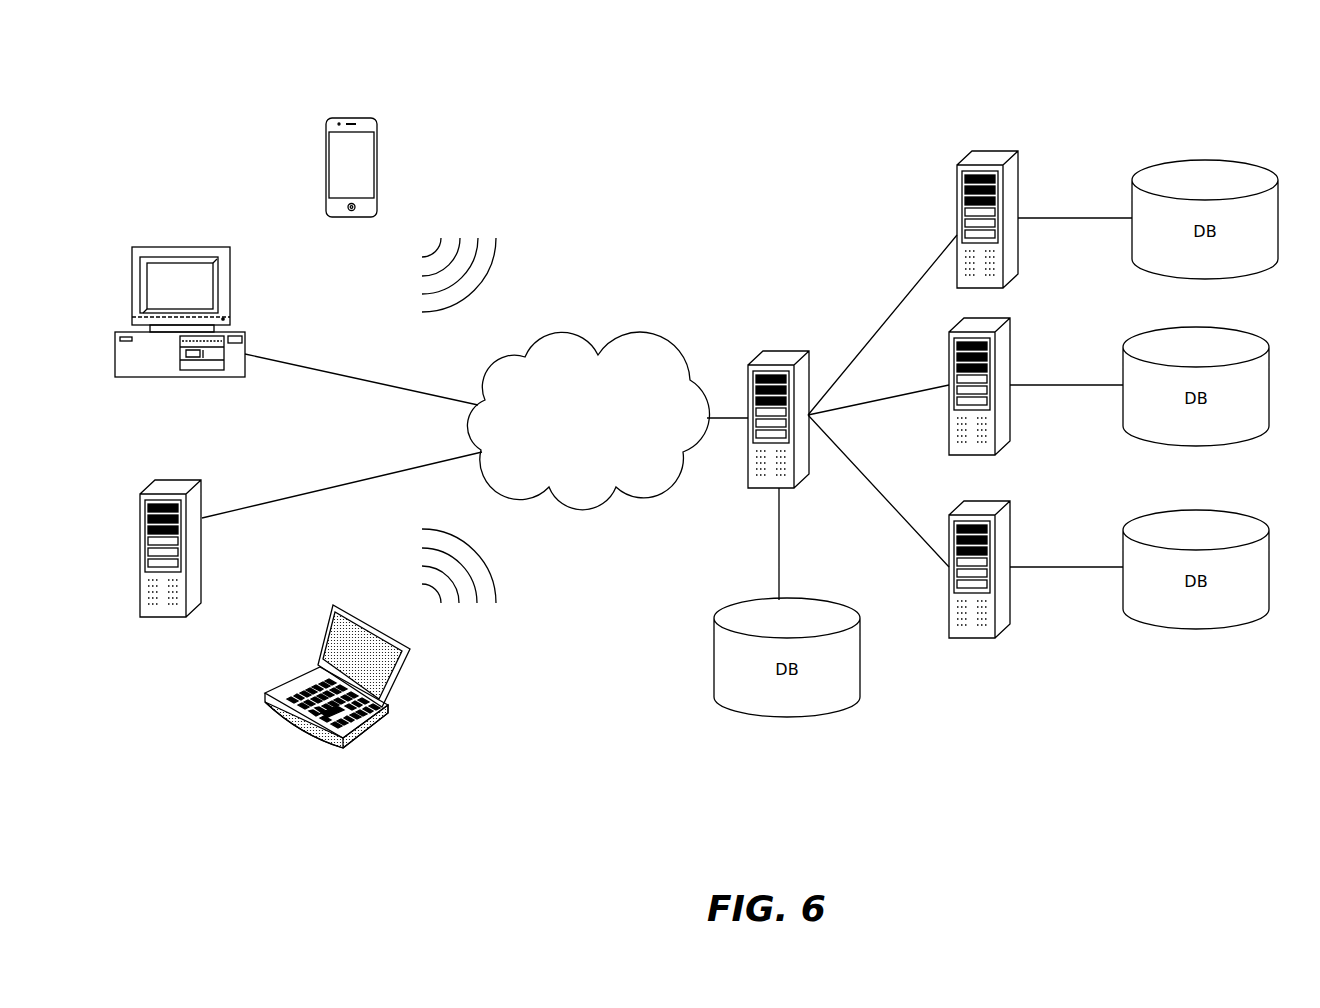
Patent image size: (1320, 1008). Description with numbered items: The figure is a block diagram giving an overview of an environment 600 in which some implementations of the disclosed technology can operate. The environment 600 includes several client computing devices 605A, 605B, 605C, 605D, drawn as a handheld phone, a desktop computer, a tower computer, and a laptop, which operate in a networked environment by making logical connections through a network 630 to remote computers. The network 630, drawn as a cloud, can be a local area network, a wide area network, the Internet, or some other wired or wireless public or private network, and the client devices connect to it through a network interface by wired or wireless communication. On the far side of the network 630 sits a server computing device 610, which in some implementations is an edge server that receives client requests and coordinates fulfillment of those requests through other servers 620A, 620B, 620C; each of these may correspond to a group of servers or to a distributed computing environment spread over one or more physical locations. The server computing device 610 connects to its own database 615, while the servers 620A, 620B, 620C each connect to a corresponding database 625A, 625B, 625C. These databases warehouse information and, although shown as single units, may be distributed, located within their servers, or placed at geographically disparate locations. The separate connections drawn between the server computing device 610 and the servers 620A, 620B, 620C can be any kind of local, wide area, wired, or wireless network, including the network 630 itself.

The environment 600 is at (842, 77).
The client computing device 605A is at (375, 118).
The client computing device 605B is at (222, 248).
The client computing device 605C is at (195, 481).
The client computing device 605D is at (410, 697).
The server computing device 610 is at (790, 352).
The database 615 is at (835, 603).
The server 620A is at (1018, 150).
The server 620B is at (1010, 318).
The server 620C is at (1010, 500).
The database 625A is at (1200, 160).
The database 625B is at (1192, 328).
The database 625C is at (1192, 512).
The network 630 is at (642, 345).